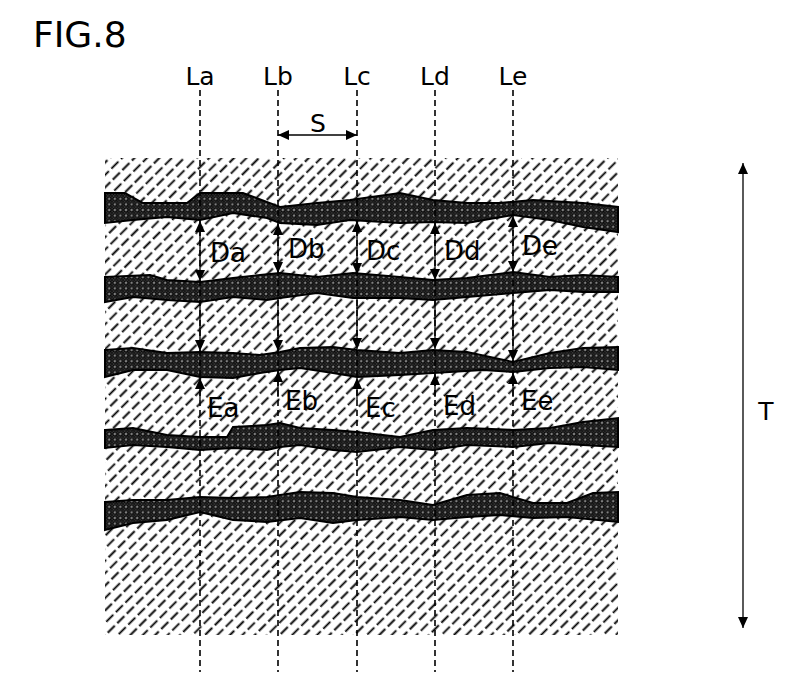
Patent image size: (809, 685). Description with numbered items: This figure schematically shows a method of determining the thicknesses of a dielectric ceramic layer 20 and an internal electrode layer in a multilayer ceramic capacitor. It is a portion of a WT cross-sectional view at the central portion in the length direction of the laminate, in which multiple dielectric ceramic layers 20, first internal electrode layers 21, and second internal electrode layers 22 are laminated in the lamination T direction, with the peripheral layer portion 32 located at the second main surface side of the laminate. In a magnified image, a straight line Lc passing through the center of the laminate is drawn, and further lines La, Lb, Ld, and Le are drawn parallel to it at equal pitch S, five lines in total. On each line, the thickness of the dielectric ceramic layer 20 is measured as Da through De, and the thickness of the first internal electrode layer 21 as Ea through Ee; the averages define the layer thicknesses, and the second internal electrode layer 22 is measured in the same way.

The dielectric ceramic layer 20 is at (605, 250).
The first internal electrode layer 21 is at (105, 207).
The second internal electrode layer 22 is at (105, 287).
The peripheral layer portion 32 is at (607, 598).